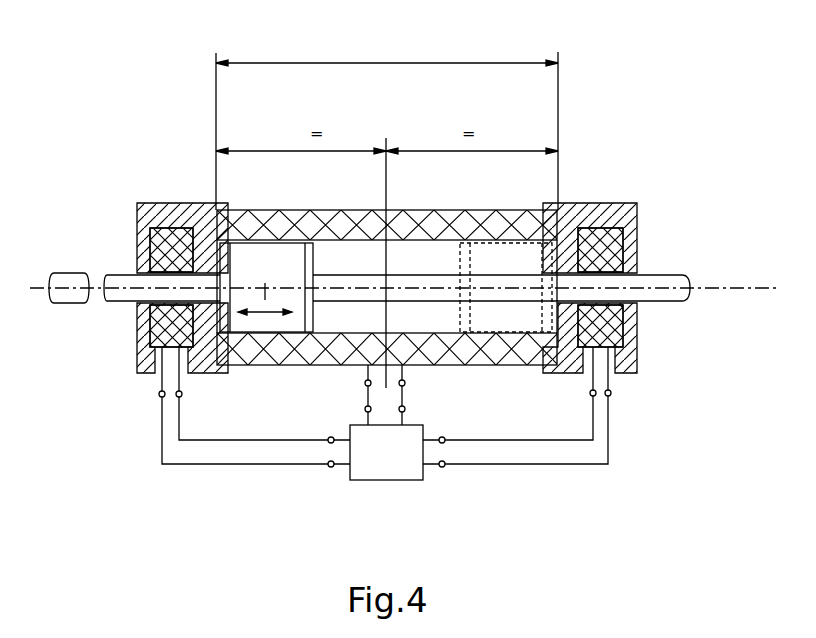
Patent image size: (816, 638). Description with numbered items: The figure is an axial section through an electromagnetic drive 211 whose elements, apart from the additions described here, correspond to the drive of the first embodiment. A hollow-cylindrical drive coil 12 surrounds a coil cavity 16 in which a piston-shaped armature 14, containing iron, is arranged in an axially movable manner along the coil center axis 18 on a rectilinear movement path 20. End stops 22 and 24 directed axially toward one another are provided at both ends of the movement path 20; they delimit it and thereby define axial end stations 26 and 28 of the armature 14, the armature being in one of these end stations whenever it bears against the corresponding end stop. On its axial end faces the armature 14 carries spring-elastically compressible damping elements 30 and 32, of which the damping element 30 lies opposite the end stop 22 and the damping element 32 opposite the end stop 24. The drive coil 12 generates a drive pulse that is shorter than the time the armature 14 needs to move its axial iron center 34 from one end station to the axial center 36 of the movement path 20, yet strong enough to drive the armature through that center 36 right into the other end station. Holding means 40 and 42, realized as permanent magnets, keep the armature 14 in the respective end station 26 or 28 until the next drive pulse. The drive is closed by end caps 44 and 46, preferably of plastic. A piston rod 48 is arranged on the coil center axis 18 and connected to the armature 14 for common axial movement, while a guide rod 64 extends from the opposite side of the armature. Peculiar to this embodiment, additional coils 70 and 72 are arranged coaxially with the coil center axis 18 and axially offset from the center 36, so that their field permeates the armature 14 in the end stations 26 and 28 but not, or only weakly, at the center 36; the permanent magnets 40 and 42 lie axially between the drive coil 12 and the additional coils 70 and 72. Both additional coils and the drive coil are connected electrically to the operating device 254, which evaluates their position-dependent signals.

The drive coil 12 is at (407, 233).
The armature 14 is at (288, 267).
The coil cavity 16 is at (337, 257).
The coil center axis 18 is at (708, 283).
The movement path 20 is at (342, 62).
The end stop 22 is at (177, 185).
The end stop 24 is at (581, 193).
The end station 26 is at (247, 245).
The end station 28 is at (555, 252).
The damping element 30 is at (242, 333).
The damping element 32 is at (290, 333).
The axial iron center 34 is at (265, 283).
The axial center 36 is at (386, 151).
The holding means 40 is at (200, 353).
The holding means 42 is at (575, 350).
The end cap 44 is at (159, 318).
The end cap 46 is at (612, 308).
The piston rod 48 is at (112, 303).
The guide rod 64 is at (657, 280).
The additional coil 70 is at (162, 330).
The additional coil 72 is at (625, 325).
The electromagnetic drive 211 is at (592, 106).
The operating device 254 is at (423, 473).